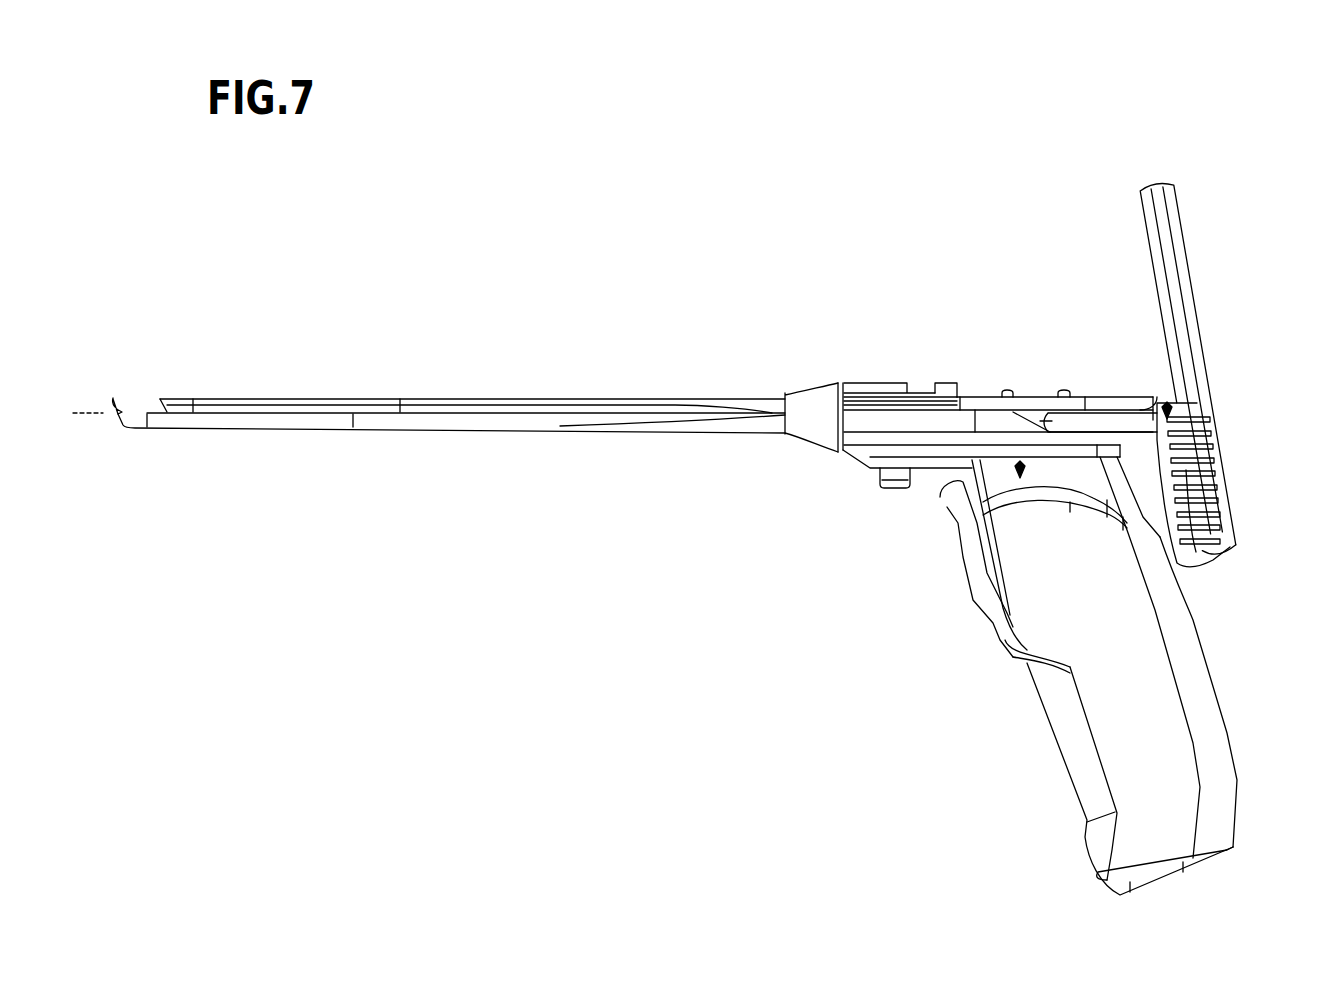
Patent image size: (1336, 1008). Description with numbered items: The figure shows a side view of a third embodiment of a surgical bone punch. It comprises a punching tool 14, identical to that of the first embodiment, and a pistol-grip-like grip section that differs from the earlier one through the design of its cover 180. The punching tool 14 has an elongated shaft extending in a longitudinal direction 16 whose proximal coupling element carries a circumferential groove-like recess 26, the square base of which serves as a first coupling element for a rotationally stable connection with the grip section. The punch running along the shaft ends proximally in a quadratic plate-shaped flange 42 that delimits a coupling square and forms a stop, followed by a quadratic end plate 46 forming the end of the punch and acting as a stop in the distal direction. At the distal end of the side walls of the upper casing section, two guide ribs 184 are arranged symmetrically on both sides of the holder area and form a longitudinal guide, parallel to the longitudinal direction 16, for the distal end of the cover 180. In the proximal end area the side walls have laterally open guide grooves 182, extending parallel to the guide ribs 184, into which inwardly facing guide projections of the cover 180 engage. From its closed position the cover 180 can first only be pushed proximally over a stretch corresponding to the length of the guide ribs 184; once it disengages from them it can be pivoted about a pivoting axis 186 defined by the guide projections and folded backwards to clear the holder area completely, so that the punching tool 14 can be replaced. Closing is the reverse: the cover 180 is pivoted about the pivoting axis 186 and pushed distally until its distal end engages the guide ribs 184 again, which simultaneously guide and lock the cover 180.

The punching tool 14 is at (441, 385).
The longitudinal direction 16 is at (98, 411).
The recess 26 is at (920, 388).
The flange 42 is at (1010, 398).
The end plate 46 is at (1085, 395).
The cover 180 is at (1193, 317).
The guide grooves 182 is at (1093, 417).
The guide ribs 184 is at (862, 408).
The pivoting axis 186 is at (1200, 427).